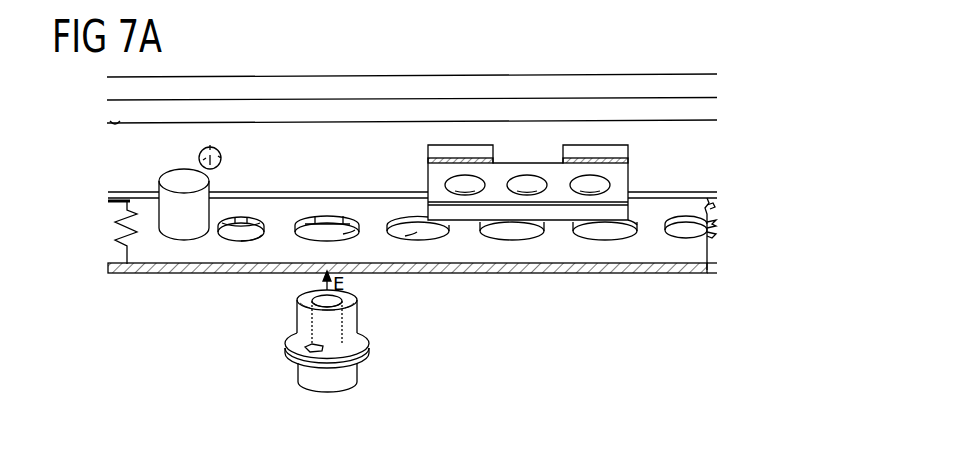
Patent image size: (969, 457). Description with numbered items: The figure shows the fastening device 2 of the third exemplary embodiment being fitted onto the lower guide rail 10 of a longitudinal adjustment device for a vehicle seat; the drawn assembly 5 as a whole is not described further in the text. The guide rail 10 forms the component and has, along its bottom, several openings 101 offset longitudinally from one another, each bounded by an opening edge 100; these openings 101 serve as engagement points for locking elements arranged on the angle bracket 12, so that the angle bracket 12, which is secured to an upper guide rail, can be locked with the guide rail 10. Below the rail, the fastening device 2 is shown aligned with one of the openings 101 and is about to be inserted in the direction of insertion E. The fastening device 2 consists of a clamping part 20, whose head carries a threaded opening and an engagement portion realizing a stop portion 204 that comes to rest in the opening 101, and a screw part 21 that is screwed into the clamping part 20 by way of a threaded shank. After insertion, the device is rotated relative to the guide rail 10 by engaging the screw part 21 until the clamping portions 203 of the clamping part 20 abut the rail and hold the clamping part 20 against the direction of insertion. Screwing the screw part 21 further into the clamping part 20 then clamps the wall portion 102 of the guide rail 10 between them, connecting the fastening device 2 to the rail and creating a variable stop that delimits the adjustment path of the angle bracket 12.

The rail arrangement 5 is at (423, 62).
The guide rail 10 is at (435, 252).
The opening edge 100 is at (315, 237).
The opening 101 is at (417, 230).
The wall portion 102 is at (262, 250).
The angle bracket 12 is at (588, 170).
The fastening device 2 is at (293, 370).
The clamping part 20 is at (307, 330).
The screw part 21 is at (289, 393).
The clamping portion 203 is at (297, 365).
The stop portion 204 is at (318, 352).